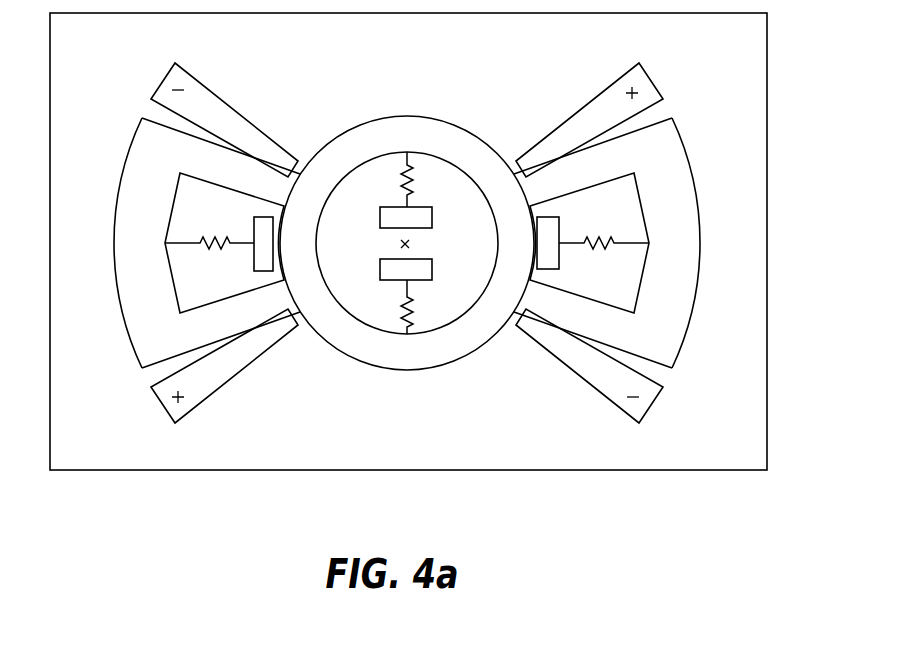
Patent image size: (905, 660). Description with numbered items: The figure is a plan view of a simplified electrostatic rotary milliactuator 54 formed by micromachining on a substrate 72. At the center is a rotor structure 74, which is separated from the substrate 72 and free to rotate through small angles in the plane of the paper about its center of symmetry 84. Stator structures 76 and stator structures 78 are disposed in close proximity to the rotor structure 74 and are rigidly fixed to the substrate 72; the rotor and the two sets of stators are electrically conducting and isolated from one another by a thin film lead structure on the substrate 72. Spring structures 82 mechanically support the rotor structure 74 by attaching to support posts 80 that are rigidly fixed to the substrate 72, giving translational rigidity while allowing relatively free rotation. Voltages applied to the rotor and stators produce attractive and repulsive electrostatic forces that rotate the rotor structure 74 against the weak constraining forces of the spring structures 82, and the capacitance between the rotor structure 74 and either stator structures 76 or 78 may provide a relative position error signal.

The electrostatic rotary milliactuator 54 is at (616, 494).
The substrate 72 is at (767, 73).
The rotor structure 74 is at (683, 331).
The stator structure 76 is at (588, 107).
The stator structure 78 is at (222, 108).
The support post 80 is at (254, 262).
The spring structure 82 is at (216, 240).
The center of symmetry 84 is at (398, 243).